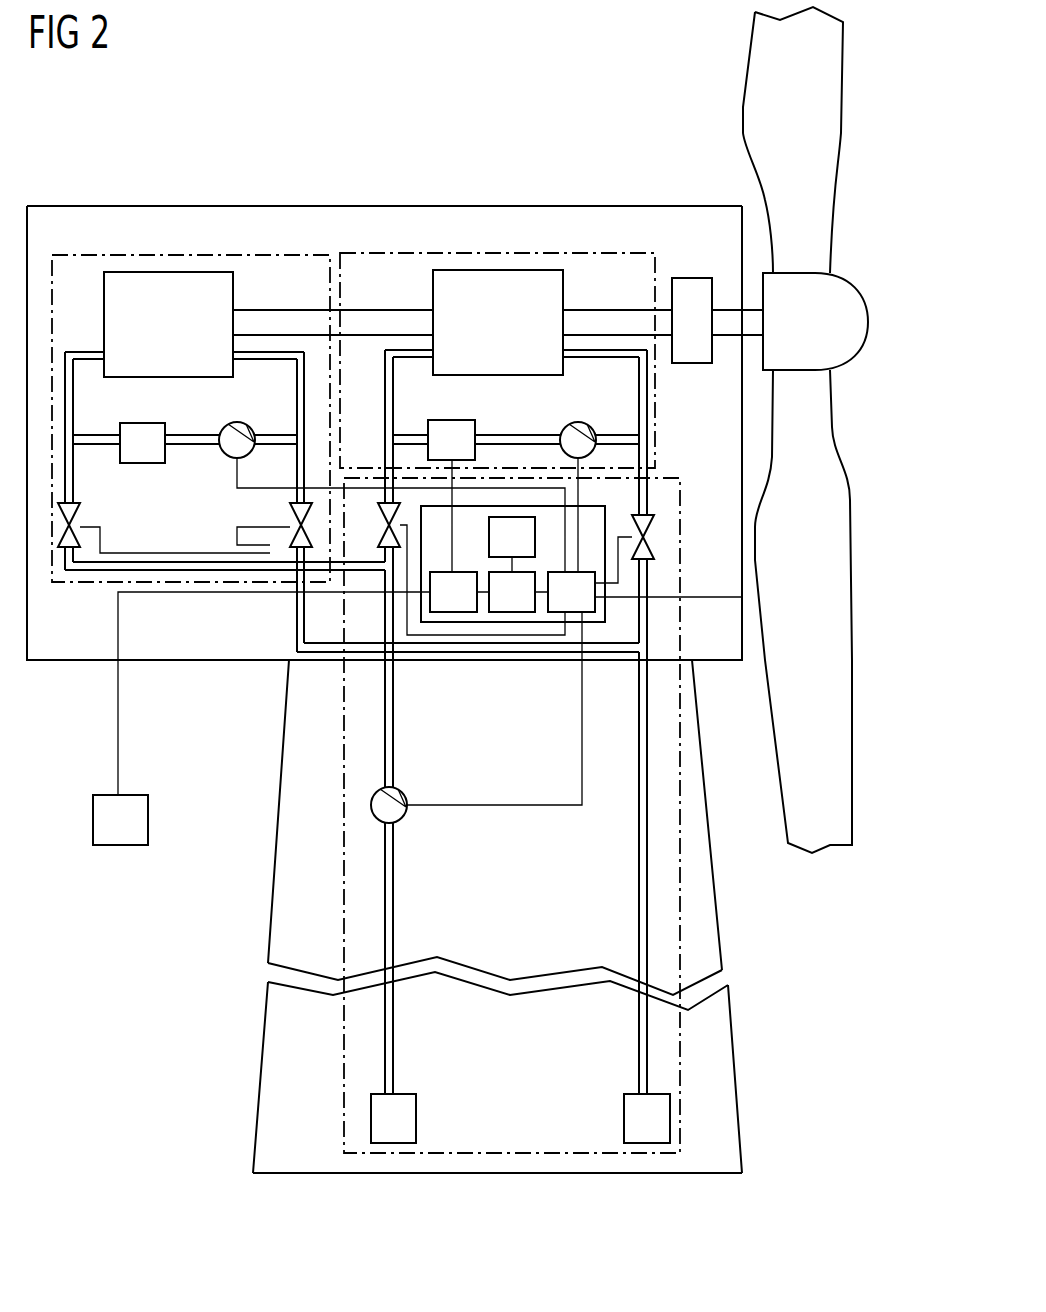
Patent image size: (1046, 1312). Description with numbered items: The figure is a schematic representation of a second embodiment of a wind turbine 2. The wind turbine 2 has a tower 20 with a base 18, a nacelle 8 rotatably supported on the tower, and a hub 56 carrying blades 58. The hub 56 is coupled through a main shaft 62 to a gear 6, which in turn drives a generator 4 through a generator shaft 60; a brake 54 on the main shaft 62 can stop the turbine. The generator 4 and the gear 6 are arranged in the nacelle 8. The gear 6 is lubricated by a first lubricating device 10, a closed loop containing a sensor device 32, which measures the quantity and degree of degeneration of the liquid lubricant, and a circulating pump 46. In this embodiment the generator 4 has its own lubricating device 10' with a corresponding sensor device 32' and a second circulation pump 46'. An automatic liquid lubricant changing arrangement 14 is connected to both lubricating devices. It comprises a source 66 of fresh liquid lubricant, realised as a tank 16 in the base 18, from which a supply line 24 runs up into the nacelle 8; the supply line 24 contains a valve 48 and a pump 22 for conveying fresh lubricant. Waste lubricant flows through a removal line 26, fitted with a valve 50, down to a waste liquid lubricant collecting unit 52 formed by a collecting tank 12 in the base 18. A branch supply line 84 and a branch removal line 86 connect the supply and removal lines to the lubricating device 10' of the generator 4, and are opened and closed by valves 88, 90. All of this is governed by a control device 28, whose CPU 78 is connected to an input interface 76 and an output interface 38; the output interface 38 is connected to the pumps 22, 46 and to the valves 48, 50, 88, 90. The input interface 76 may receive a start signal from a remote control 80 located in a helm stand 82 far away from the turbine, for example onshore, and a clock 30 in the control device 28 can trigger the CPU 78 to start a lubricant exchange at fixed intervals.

The wind turbine 2 is at (523, 162).
The generator 4 is at (168, 272).
The gear 6 is at (497, 270).
The nacelle 8 is at (392, 206).
The first lubricating device 10 is at (497, 316).
The lubricating device of the generator 10' is at (191, 373).
The collecting tank 12 is at (661, 1133).
The automatic liquid lubricant changing arrangement 14 is at (344, 917).
The tank 16 is at (407, 1133).
The base of the tower 18 is at (737, 1083).
The tower 20 is at (708, 787).
The pump 22 is at (407, 795).
The supply line 24 is at (396, 690).
The removal line 26 is at (640, 840).
The control device 28 is at (512, 645).
The clock 30 is at (498, 552).
The sensor device 32 is at (451, 440).
The sensor device 32' is at (142, 443).
The output interface 38 is at (557, 607).
The circulating pump 46 is at (588, 414).
The second circulation pump 46' is at (249, 414).
The valve 48 is at (376, 505).
The valve 50 is at (660, 525).
The waste liquid lubricant collecting unit 52 is at (624, 1118).
The brake 54 is at (690, 278).
The hub 56 is at (795, 281).
The blades 58 is at (770, 62).
The generator shaft 60 is at (388, 322).
The main shaft 62 is at (618, 322).
The source of fresh liquid lubricant 66 is at (417, 1118).
The input interface 76 is at (439, 607).
The CPU 78 is at (498, 607).
The remote control 80 is at (135, 836).
The helm stand 82 is at (120, 846).
The branch supply line 84 is at (170, 562).
The branch removal line 86 is at (297, 630).
The valve 88 is at (82, 520).
The valve 90 is at (290, 520).